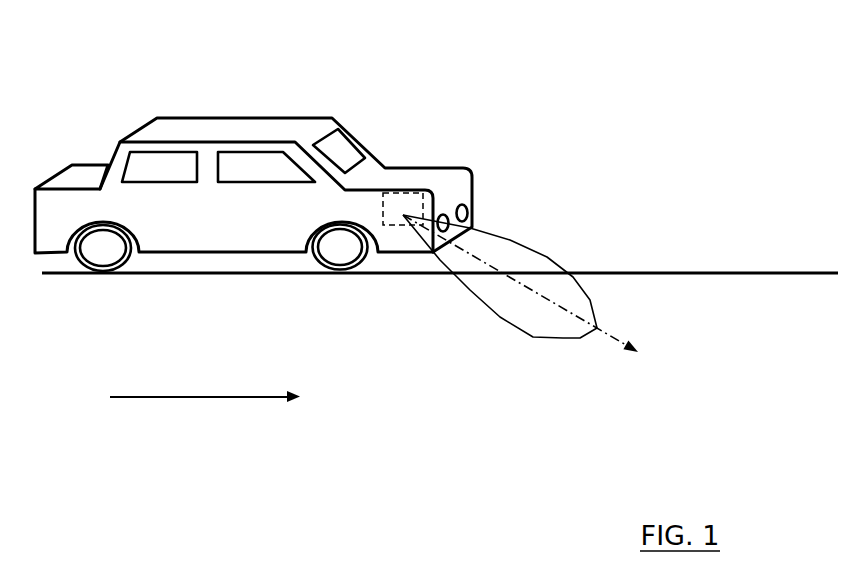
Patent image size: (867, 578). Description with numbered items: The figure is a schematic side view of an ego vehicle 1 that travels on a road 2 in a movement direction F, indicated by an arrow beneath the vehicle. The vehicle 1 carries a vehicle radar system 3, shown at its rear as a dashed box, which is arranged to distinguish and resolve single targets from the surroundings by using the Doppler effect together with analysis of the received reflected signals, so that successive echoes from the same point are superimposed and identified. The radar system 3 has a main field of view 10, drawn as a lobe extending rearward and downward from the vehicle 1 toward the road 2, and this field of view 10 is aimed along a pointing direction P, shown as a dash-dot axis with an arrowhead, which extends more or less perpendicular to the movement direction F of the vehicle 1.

The ego vehicle 1 is at (313, 59).
The road 2 is at (705, 274).
The vehicle radar system 3 is at (407, 193).
The main field of view 10 is at (582, 291).
The pointing direction P is at (537, 283).
The movement direction F is at (205, 384).